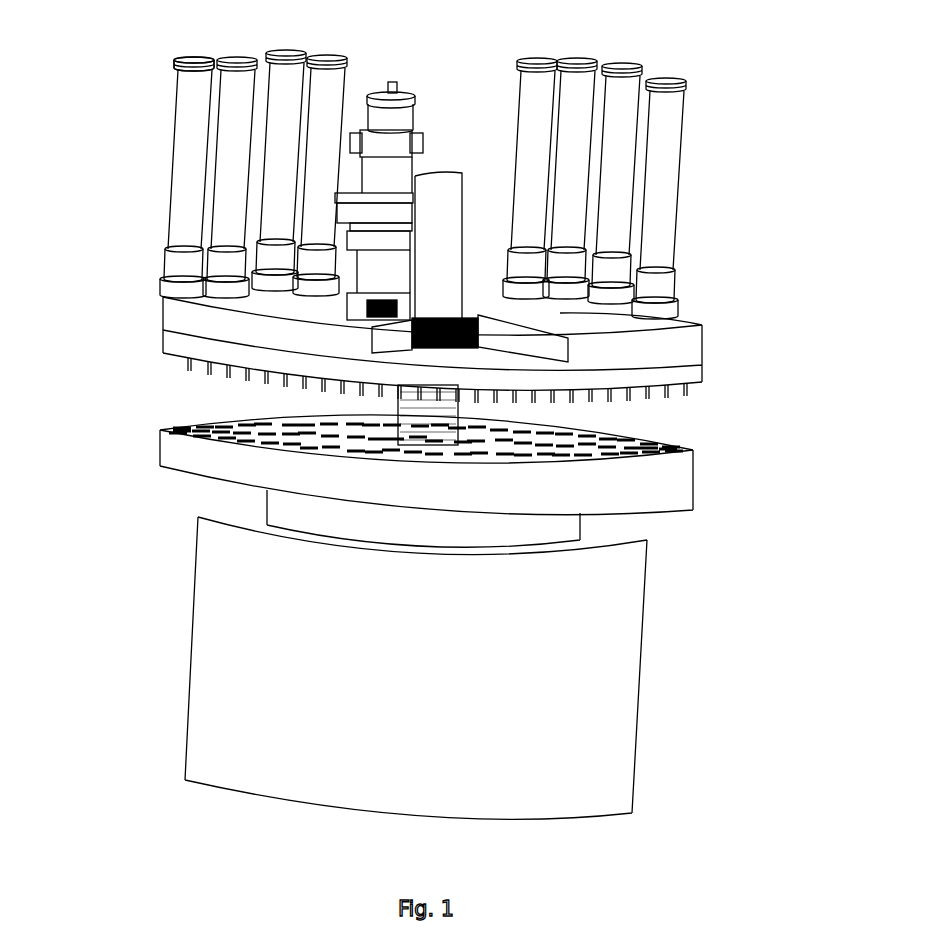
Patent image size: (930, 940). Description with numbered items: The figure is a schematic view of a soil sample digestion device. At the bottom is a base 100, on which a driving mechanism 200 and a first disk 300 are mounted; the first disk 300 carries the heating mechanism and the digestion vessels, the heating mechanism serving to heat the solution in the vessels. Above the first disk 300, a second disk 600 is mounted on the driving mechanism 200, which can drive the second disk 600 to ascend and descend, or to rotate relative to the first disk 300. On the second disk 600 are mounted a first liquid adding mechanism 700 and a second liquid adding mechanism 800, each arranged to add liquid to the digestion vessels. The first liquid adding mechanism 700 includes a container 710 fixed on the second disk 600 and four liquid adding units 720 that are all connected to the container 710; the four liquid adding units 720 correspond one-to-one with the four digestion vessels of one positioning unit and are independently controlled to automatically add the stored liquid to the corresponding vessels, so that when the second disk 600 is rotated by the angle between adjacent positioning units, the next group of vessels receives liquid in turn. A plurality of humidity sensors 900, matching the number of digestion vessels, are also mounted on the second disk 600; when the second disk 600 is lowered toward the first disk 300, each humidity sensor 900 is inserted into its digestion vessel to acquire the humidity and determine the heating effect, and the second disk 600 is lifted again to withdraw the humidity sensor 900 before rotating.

The base 100 is at (472, 750).
The driving mechanism 200 is at (433, 415).
The first disk 300 is at (663, 490).
The second disk 600 is at (613, 377).
The first liquid adding mechanism 700 is at (152, 208).
The container 710 is at (247, 308).
The liquid adding units 720 is at (193, 60).
The second liquid adding mechanism 800 is at (653, 333).
The humidity sensor 900 is at (204, 377).